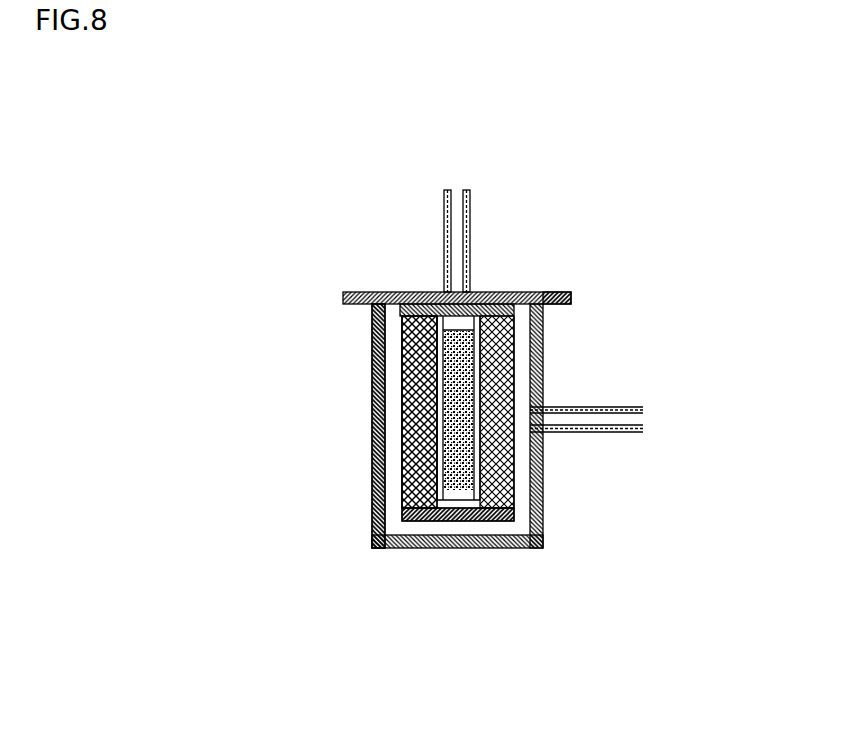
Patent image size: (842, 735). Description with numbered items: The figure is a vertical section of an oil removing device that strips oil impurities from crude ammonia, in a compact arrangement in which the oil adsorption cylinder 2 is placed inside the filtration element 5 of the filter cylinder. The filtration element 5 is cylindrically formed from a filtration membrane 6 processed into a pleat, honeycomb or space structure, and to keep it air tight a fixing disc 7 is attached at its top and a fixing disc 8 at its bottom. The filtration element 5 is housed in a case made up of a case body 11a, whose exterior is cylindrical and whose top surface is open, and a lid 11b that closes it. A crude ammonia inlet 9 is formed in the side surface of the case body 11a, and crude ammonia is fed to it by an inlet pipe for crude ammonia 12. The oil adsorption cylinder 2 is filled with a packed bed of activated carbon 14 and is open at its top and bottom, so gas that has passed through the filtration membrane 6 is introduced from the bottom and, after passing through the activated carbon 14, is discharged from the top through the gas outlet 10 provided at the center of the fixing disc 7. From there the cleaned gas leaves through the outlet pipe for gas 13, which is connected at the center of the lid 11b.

The oil adsorption cylinder 2 is at (497, 515).
The filtration element 5 is at (518, 333).
The filtration membrane 6 is at (402, 352).
The fixing disc 7 is at (415, 291).
The fixing disc 8 is at (400, 518).
The crude ammonia inlet 9 is at (545, 430).
The gas outlet 10 is at (472, 285).
The case body 11a is at (372, 470).
The lid 11b is at (572, 292).
The inlet pipe for crude ammonia 12 is at (588, 407).
The outlet pipe for gas 13 is at (446, 227).
The activated carbon 14 is at (453, 490).